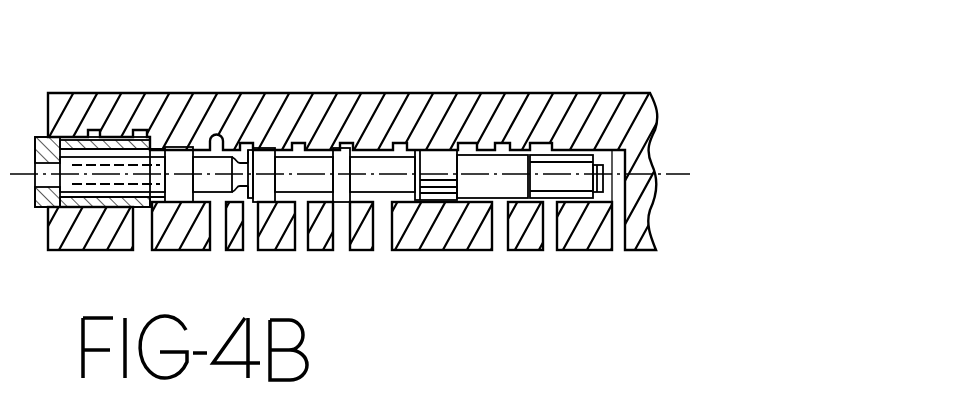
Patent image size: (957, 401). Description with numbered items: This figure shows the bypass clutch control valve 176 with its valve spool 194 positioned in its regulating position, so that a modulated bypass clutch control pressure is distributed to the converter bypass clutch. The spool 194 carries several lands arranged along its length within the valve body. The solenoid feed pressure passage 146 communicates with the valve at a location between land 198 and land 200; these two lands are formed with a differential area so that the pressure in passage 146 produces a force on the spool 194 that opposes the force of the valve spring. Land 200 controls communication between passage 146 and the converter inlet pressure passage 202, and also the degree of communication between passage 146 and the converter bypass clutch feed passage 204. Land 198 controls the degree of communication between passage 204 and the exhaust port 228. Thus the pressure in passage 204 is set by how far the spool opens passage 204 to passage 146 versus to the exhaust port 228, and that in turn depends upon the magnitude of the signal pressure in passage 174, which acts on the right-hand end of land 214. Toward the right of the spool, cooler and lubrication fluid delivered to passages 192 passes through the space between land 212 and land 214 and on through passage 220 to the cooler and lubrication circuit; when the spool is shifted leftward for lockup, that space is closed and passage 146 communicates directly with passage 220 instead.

The solenoid feed pressure passage 146 is at (338, 212).
The passage 174 is at (617, 243).
The bypass clutch control valve 176 is at (662, 140).
The passages 192 is at (549, 243).
The valve spool 194 is at (378, 184).
The land 198 is at (263, 155).
The land 200 is at (338, 149).
The converter inlet pressure passage 202 is at (383, 246).
The converter bypass clutch feed passage 204 is at (302, 237).
The land 212 is at (433, 163).
The land 214 is at (543, 170).
The passage 220 is at (497, 243).
The exhaust port 228 is at (248, 237).